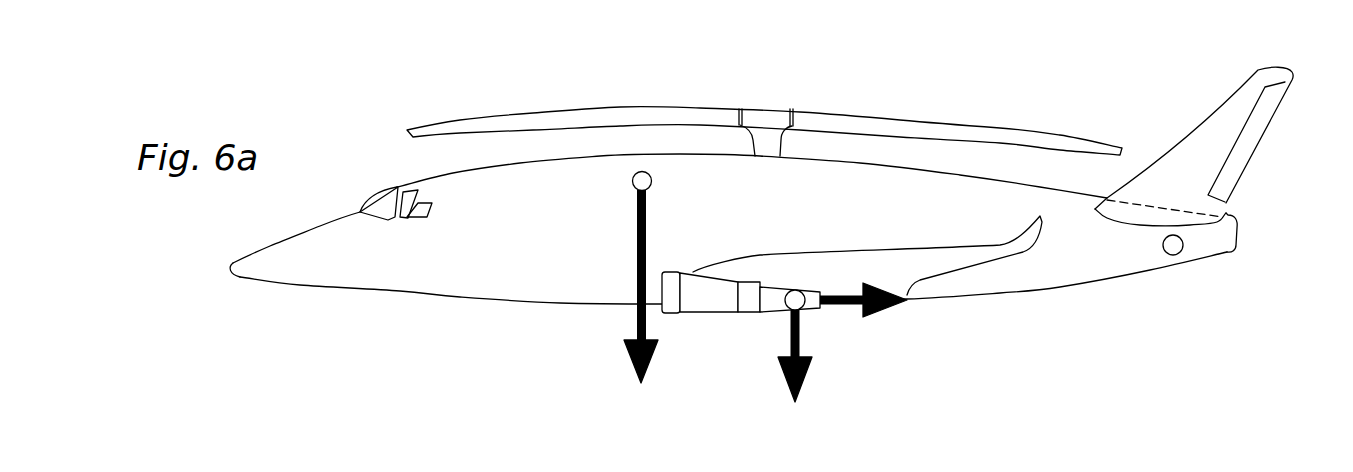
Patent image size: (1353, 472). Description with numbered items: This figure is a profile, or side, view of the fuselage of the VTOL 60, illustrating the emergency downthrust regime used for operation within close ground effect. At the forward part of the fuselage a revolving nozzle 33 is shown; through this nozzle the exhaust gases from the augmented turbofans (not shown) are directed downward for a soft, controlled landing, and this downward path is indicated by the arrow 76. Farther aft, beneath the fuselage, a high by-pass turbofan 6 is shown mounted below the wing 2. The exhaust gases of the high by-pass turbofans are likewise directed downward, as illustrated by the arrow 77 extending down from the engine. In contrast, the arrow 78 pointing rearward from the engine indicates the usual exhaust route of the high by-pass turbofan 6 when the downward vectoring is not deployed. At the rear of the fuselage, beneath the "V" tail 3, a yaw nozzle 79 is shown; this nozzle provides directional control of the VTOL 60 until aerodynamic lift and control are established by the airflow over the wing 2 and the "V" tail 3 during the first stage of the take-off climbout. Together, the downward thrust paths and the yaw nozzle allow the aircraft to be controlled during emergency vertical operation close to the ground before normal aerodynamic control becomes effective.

The VTOL 60 is at (368, 138).
The "V" tail 3 is at (1207, 143).
The wing 2 is at (848, 265).
The revolving nozzle 33 is at (633, 178).
The arrow 76 is at (637, 283).
The high by-pass turbofan 6 is at (700, 305).
The arrow 77 is at (803, 338).
The arrow 78 is at (845, 307).
The yaw nozzle 79 is at (1172, 255).